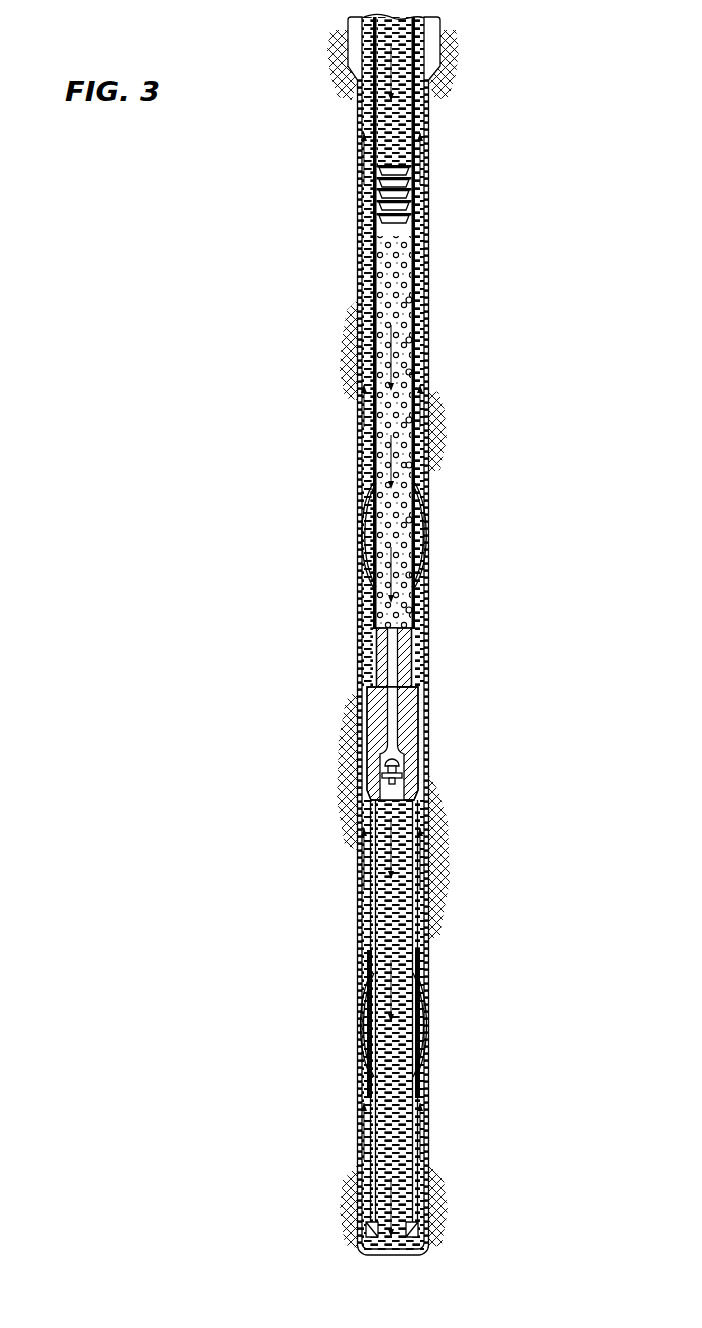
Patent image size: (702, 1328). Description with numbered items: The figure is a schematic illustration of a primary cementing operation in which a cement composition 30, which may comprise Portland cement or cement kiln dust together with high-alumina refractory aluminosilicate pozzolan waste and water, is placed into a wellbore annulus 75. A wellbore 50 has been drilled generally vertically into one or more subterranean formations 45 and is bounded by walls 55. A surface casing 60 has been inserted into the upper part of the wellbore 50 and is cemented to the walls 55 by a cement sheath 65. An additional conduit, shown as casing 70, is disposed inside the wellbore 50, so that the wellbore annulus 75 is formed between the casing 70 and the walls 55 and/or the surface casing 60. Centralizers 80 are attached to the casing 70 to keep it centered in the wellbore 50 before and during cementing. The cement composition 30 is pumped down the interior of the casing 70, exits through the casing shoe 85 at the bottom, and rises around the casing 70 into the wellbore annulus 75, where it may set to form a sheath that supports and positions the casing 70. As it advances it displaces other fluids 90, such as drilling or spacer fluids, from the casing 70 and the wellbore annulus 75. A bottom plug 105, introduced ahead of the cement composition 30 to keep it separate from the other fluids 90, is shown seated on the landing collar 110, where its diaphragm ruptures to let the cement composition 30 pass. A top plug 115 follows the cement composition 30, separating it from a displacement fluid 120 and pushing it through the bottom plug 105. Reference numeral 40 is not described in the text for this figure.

The cement composition 30 is at (391, 346).
The proppant particles 40 is at (397, 316).
The subterranean formation 45 is at (394, 924).
The wellbore 50 is at (431, 479).
The walls 55 is at (428, 226).
The surface casing 60 is at (441, 25).
The cement sheath 65 is at (449, 46).
The casing 70 is at (411, 370).
The wellbore annulus 75 is at (362, 457).
The centralizers 80 is at (360, 532).
The casing shoe 85 is at (367, 1180).
The other fluids 90 is at (362, 163).
The bottom plug 105 is at (367, 645).
The landing collar 110 is at (358, 712).
The top plug 115 is at (370, 210).
The displacement fluid 120 is at (396, 68).